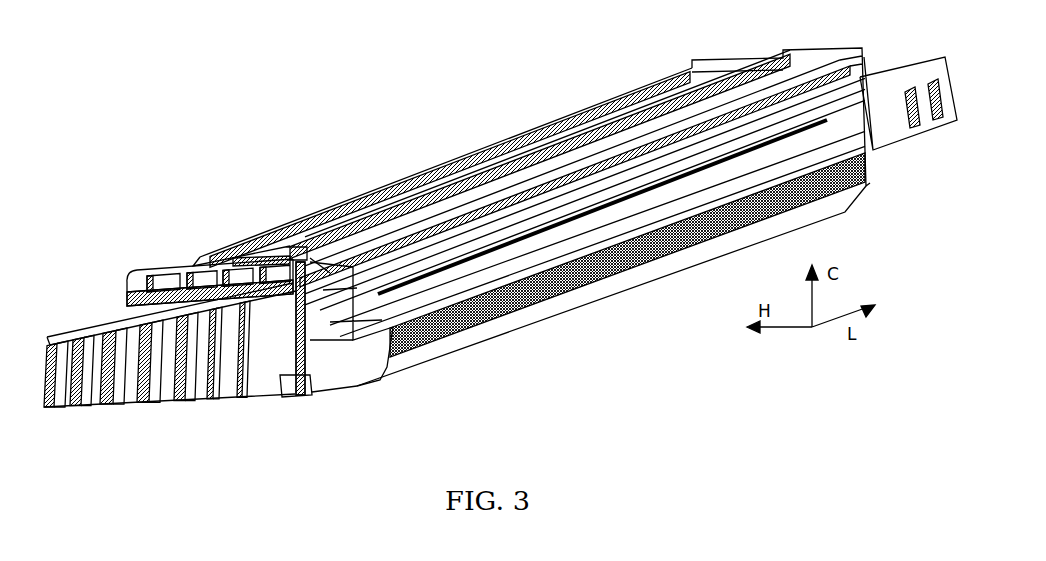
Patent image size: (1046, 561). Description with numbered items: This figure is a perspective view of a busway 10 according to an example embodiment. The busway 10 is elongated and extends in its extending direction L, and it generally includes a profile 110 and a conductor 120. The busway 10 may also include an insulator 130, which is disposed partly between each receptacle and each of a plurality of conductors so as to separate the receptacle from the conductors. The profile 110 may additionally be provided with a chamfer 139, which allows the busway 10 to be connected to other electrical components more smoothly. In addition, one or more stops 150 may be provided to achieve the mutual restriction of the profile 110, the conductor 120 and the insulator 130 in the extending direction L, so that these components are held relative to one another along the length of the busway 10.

The busway 10 is at (405, 122).
The profile 110 is at (357, 353).
The conductor 120 is at (107, 322).
The insulator 130 is at (317, 382).
The chamfer 139 is at (597, 293).
The stops 150 is at (187, 273).